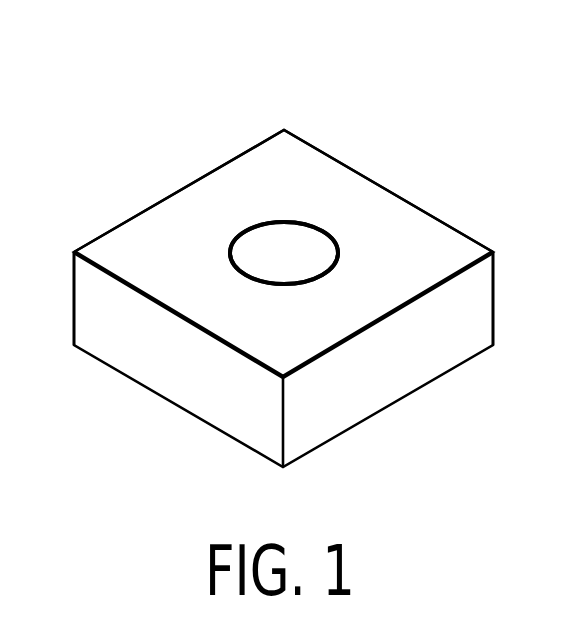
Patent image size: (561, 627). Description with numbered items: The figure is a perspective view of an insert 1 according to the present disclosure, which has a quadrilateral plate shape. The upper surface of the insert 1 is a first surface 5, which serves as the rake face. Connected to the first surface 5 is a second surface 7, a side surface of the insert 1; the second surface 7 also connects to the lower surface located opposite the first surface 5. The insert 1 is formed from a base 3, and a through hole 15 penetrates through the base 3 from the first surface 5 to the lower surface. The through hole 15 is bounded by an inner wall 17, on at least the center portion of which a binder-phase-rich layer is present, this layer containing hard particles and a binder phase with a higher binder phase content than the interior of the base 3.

The insert 1 is at (459, 69).
The base 3 is at (120, 203).
The first surface 5 is at (188, 198).
The second surface 7 is at (80, 301).
The through hole 15 is at (315, 253).
The inner wall 17 is at (283, 243).